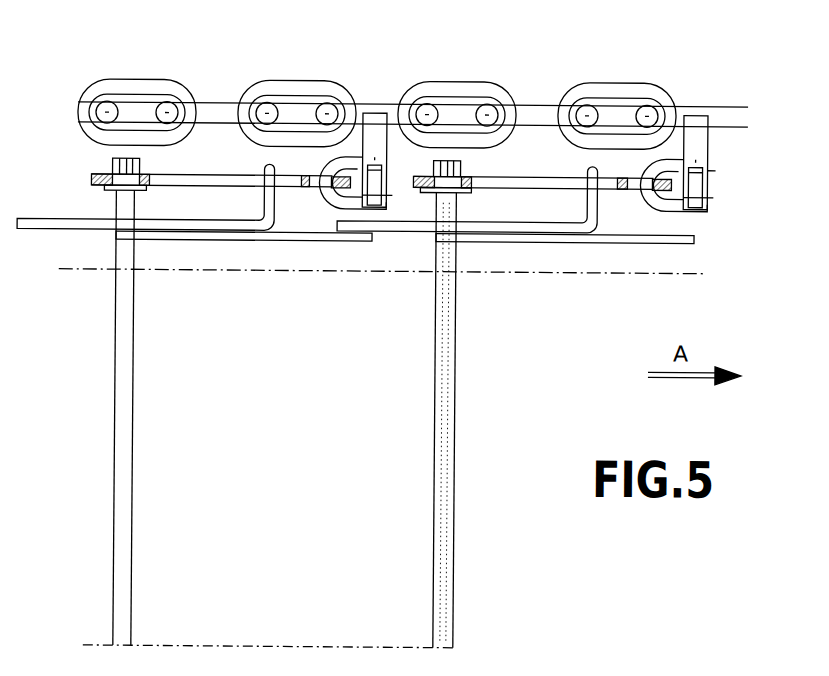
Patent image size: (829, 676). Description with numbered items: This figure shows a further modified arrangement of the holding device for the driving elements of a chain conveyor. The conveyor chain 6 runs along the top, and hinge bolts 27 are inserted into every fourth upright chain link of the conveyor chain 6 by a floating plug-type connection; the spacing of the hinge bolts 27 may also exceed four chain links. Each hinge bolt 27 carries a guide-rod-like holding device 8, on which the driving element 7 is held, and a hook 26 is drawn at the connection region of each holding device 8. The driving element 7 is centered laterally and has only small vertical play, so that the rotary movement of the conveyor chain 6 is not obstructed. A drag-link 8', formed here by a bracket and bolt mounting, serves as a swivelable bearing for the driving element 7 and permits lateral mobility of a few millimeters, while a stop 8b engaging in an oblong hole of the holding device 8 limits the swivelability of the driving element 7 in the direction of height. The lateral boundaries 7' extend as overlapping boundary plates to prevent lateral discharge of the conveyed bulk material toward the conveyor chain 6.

The conveyor chain 6 is at (236, 88).
The driving element 7 is at (311, 419).
The lateral boundary 7' is at (404, 270).
The holding device 8 is at (533, 122).
The drag-link 8' is at (186, 160).
The stop 8b is at (265, 168).
The hook 26 is at (360, 105).
The hinge bolt 27 is at (374, 128).